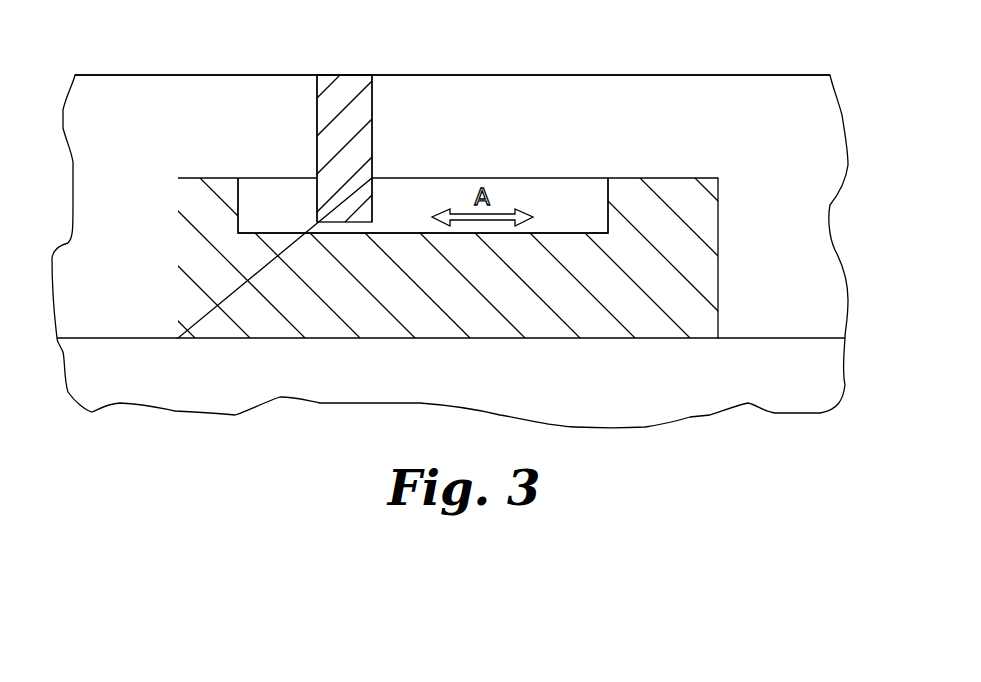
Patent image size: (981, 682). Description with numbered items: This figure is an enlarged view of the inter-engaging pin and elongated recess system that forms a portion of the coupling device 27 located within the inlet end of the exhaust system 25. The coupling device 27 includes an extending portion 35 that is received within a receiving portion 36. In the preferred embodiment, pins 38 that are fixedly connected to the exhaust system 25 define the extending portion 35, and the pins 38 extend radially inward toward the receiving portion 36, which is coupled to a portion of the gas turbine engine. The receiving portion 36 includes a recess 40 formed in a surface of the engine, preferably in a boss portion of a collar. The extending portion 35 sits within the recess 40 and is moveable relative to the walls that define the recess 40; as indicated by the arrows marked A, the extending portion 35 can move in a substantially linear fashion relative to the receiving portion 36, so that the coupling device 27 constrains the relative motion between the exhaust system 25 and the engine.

The exhaust system 25 is at (517, 75).
The coupling device 27 is at (747, 152).
The extending portion 35 is at (372, 110).
The receiving portion 36 is at (215, 205).
The pins 38 is at (317, 122).
The recess 40 is at (578, 202).